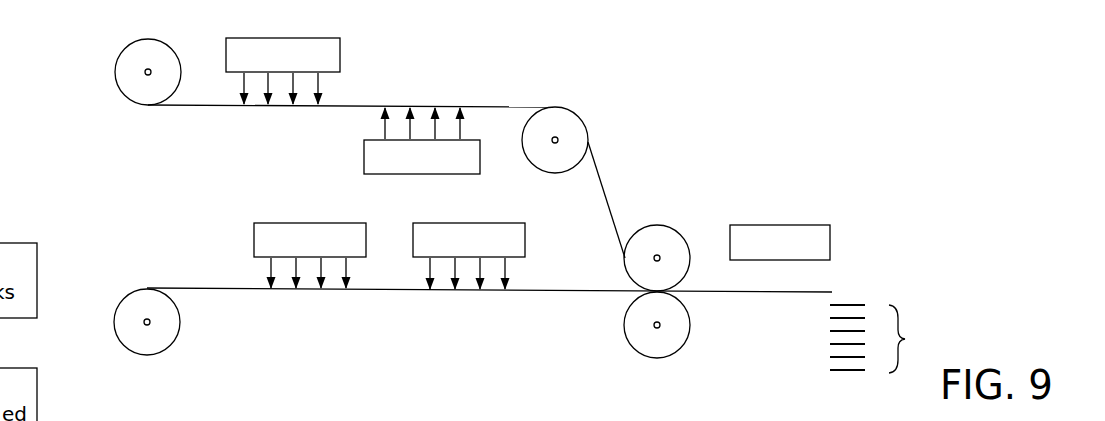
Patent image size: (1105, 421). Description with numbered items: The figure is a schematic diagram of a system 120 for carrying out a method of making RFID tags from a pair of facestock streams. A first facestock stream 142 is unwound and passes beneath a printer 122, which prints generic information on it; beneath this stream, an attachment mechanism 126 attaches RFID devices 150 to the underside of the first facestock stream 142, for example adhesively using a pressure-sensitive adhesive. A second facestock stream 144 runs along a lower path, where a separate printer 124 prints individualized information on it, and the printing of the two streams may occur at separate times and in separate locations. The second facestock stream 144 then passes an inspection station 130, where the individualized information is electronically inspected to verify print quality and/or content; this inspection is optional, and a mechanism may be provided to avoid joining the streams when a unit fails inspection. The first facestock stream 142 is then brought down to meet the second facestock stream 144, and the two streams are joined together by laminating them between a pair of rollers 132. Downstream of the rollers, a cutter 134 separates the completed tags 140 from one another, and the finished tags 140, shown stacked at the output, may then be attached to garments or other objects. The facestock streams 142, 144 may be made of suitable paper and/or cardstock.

The system 120 is at (97, 42).
The printer 122 is at (341, 57).
The printer 124 is at (338, 222).
The attachment mechanism 126 is at (364, 152).
The inspection station 130 is at (467, 222).
The pair of rollers 132 is at (631, 214).
The cutter 134 is at (807, 225).
The RFID tag 140 is at (175, 404).
The first facestock stream 142 is at (207, 108).
The second facestock stream 144 is at (210, 290).
The RFID devices 150 is at (366, 410).